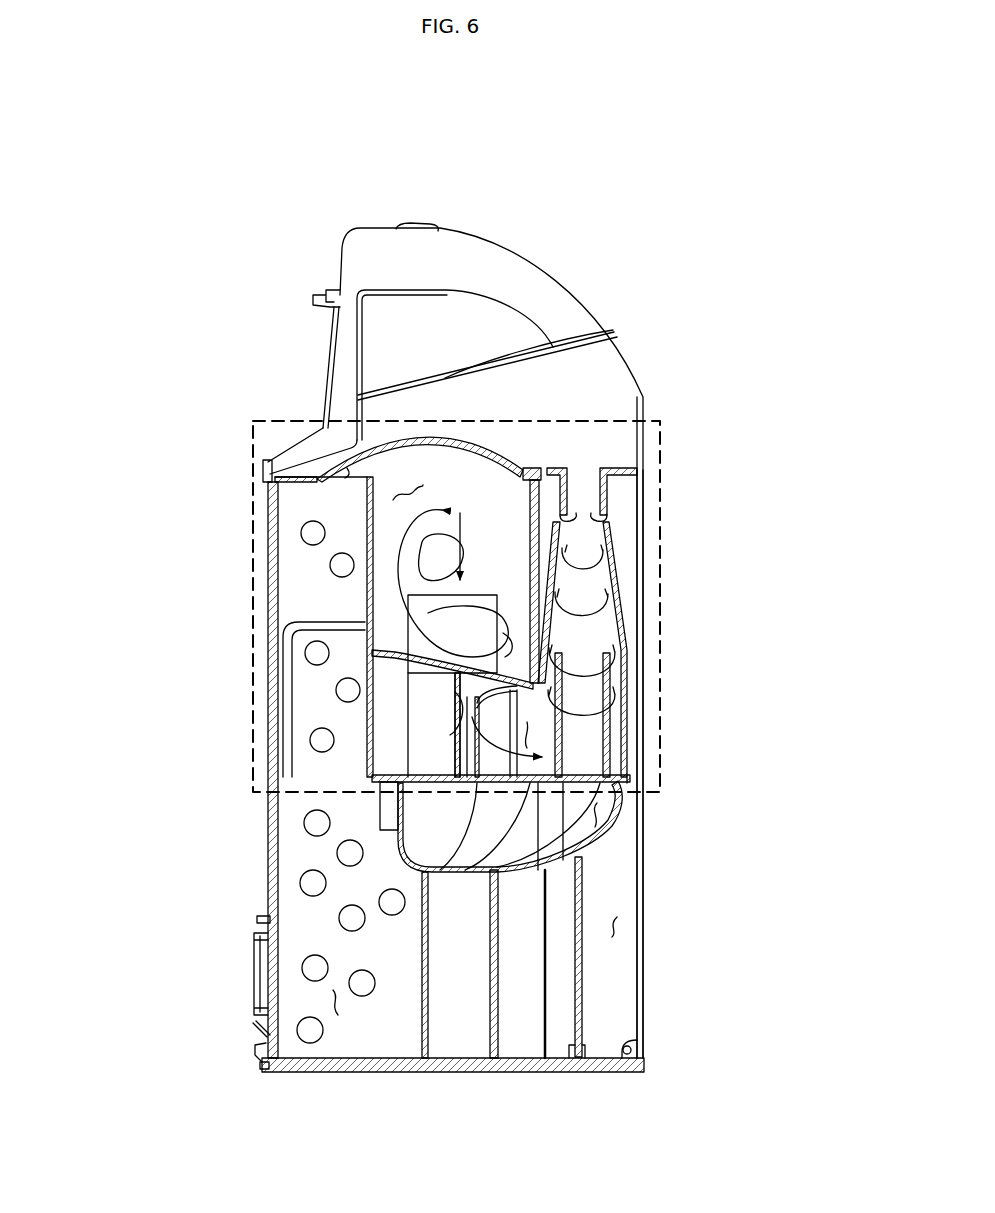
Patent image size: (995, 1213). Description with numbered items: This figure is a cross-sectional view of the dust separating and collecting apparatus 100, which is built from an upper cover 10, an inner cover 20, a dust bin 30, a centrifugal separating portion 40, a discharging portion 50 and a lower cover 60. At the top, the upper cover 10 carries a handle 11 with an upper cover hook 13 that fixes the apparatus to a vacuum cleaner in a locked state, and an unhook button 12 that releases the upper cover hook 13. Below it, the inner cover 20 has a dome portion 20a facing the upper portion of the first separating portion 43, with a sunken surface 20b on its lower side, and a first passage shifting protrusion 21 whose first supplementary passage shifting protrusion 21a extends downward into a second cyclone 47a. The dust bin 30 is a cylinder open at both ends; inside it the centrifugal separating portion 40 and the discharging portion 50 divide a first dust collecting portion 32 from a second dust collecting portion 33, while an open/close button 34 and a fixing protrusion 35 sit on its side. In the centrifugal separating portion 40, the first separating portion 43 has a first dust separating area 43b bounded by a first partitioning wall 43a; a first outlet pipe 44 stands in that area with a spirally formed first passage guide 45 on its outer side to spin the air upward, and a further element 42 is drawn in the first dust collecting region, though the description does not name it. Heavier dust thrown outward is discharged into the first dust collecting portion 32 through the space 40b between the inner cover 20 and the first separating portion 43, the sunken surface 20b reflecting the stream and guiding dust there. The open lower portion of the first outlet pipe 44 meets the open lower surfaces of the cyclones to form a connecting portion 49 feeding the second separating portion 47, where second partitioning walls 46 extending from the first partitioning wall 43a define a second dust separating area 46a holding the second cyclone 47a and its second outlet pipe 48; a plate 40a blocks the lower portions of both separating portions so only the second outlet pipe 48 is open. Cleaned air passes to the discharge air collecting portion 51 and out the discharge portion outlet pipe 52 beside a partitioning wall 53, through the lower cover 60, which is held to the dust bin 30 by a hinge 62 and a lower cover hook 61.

The dust separating and collecting apparatus 100 is at (70, 165).
The upper cover 10 is at (492, 599).
The handle 11 is at (490, 277).
The unhook button 12 is at (415, 227).
The upper cover hook 13 is at (323, 296).
The inner cover 20 is at (574, 370).
The dome portion 20a is at (453, 442).
The sunken surface 20b is at (558, 437).
The first passage shifting protrusion 21 is at (707, 491).
The first supplementary passage shifting protrusion 21a is at (587, 521).
The dust bin 30 is at (270, 848).
The first dust collecting portion 32 is at (290, 983).
The second dust collecting portion 33 is at (617, 917).
The open/close button 34 is at (263, 968).
The fixing protrusion 35 is at (252, 1045).
The centrifugal separating portion 40 is at (252, 540).
The plate 40a is at (457, 783).
The space 40b is at (347, 468).
The filter 42 is at (310, 692).
The first separating portion 43 is at (360, 503).
The first partitioning wall 43a is at (368, 585).
The first dust separating area 43b is at (405, 488).
The first outlet pipe 44 is at (425, 612).
The first passage guide 45 is at (402, 651).
The second partitioning wall 46 is at (708, 586).
The second dust separating area 46a is at (621, 593).
The second separating portion 47 is at (642, 541).
The second cyclone 47a is at (620, 613).
The second outlet pipe 48 is at (609, 688).
The connecting portion 49 is at (532, 730).
The discharging portion 50 is at (609, 835).
The discharge air collecting portion 51 is at (597, 805).
The discharge portion outlet pipe 52 is at (400, 997).
The partitioning wall 53 is at (581, 960).
The lower cover 60 is at (553, 1072).
The lower cover hook 61 is at (254, 1026).
The hinge 62 is at (633, 1050).